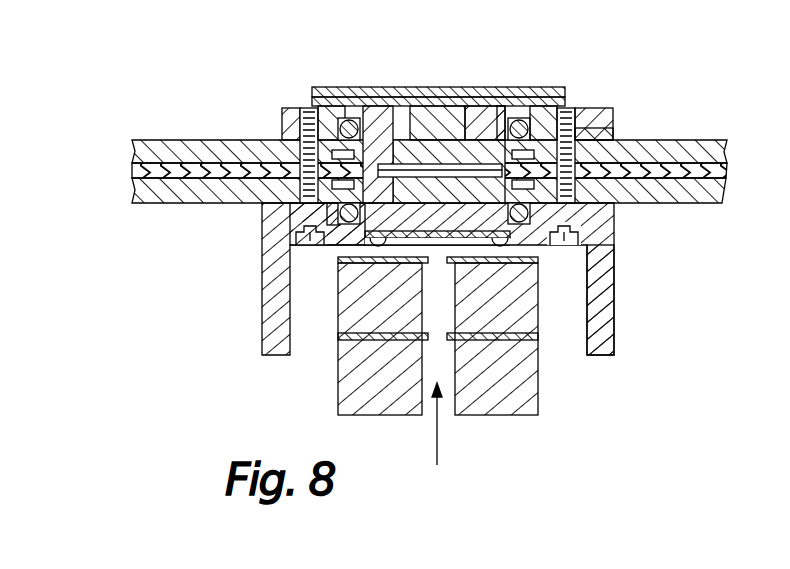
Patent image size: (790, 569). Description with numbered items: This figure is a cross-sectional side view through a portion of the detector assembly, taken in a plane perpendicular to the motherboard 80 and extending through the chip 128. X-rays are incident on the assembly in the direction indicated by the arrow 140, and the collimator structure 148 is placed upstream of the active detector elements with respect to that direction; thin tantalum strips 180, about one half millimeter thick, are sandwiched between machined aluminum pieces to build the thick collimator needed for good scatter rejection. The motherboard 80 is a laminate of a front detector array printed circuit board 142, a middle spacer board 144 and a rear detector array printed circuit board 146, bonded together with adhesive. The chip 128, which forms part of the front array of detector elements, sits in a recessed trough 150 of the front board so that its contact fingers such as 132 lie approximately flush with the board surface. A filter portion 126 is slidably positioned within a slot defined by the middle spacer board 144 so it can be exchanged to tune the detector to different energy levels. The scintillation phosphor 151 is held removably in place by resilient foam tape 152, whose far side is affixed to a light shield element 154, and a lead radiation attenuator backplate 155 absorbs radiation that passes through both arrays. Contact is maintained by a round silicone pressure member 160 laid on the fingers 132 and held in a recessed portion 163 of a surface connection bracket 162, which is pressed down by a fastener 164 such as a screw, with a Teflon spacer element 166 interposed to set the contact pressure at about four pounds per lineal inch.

The motherboard 80 is at (414, 174).
The rear detector array printed circuit board 146 is at (130, 148).
The middle spacer board 144 is at (131, 170).
The front detector array printed circuit board 142 is at (131, 196).
The silicone pressure member 160 is at (565, 92).
The fastener 164 is at (598, 120).
The spacer element 166 is at (580, 137).
The surface connection bracket 162 is at (520, 106).
The recessed portion 163 is at (545, 106).
The radiation attenuator backplate 155 is at (312, 100).
The light shield element 154 is at (282, 110).
The recessed portion 150 is at (285, 142).
The scintillation phosphor 151 is at (432, 106).
The resilient foam tape 152 is at (460, 106).
The contact finger 132 is at (500, 106).
The chip 128 is at (418, 106).
The filter portion 126 is at (312, 208).
The collimator structure 148 is at (327, 214).
The tantalum strip 180 is at (540, 338).
The arrow 140 is at (442, 422).